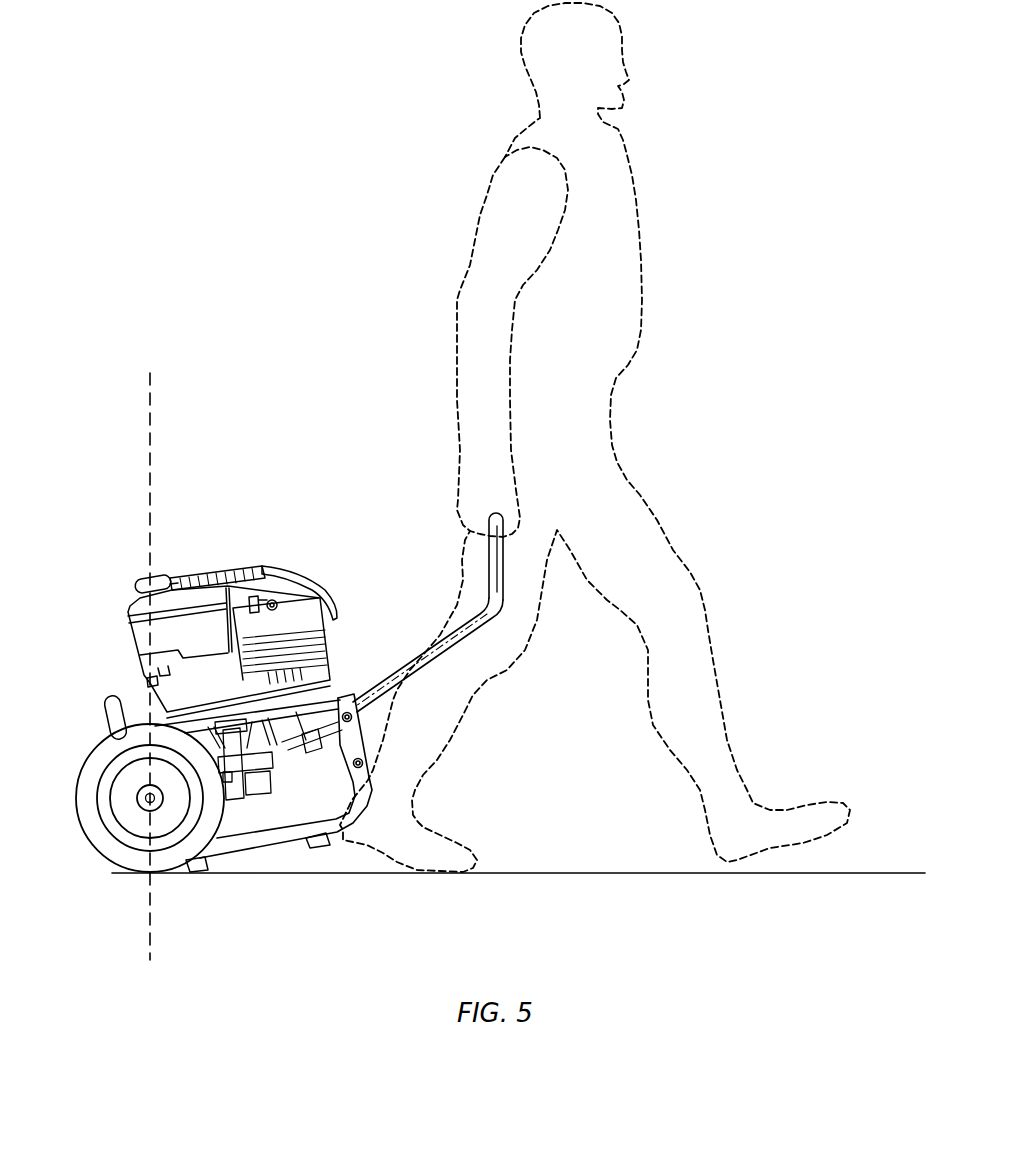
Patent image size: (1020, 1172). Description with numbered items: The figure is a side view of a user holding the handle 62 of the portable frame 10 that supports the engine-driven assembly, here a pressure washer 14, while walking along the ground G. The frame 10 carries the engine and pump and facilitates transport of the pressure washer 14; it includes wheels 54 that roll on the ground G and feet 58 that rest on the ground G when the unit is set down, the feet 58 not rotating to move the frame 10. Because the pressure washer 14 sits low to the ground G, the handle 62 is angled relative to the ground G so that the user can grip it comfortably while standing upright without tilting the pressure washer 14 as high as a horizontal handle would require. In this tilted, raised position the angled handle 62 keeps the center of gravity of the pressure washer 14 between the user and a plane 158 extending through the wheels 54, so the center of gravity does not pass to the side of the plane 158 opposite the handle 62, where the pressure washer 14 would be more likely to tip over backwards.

The portable frame 10 is at (288, 869).
The pressure washer 14 is at (93, 522).
The wheels 54 is at (105, 845).
The feet 58 is at (197, 862).
The handle 62 is at (478, 527).
The plane extending through the wheels 158 is at (152, 438).
The ground G is at (665, 873).